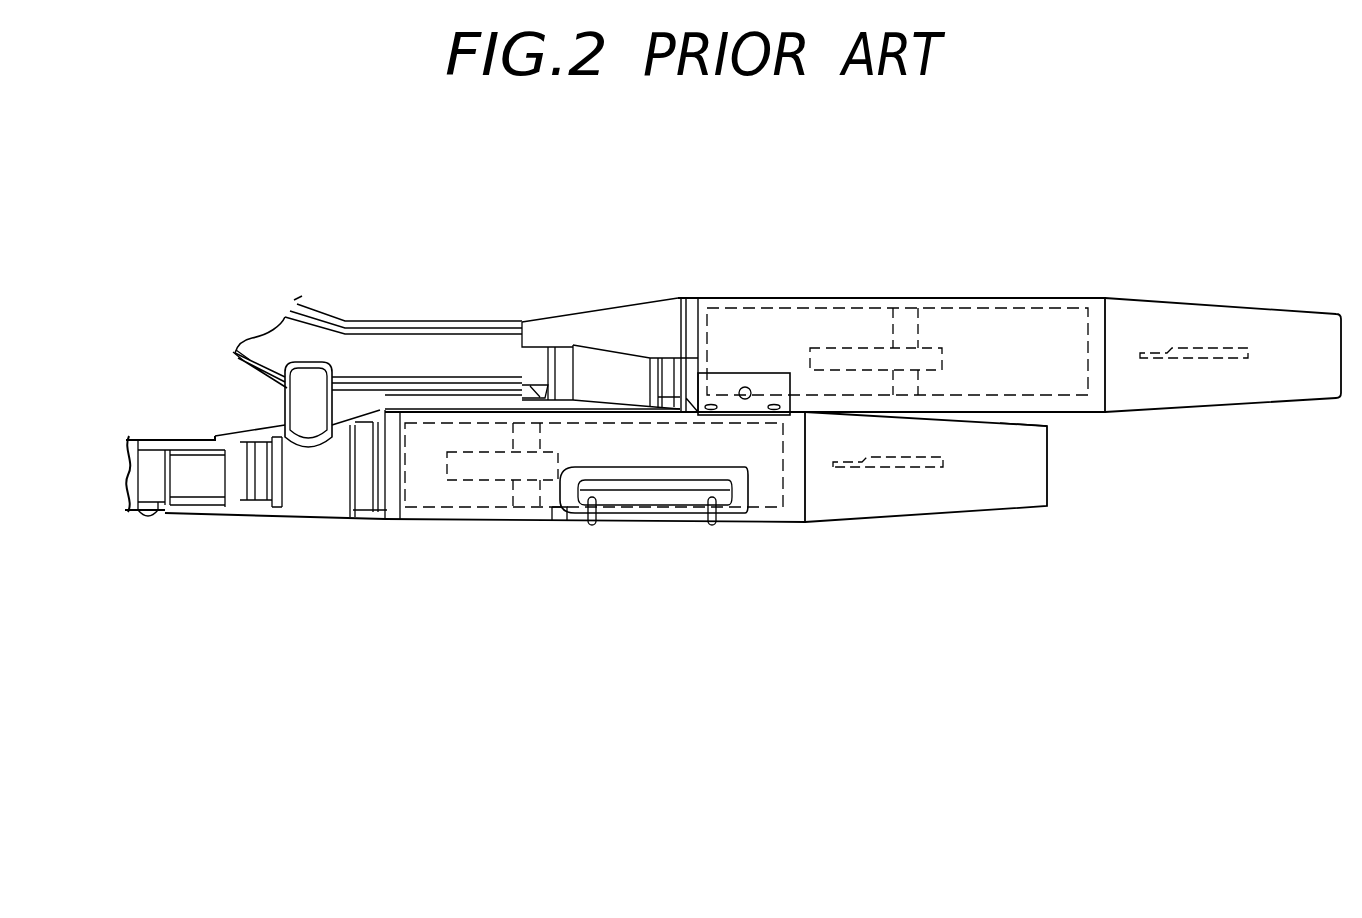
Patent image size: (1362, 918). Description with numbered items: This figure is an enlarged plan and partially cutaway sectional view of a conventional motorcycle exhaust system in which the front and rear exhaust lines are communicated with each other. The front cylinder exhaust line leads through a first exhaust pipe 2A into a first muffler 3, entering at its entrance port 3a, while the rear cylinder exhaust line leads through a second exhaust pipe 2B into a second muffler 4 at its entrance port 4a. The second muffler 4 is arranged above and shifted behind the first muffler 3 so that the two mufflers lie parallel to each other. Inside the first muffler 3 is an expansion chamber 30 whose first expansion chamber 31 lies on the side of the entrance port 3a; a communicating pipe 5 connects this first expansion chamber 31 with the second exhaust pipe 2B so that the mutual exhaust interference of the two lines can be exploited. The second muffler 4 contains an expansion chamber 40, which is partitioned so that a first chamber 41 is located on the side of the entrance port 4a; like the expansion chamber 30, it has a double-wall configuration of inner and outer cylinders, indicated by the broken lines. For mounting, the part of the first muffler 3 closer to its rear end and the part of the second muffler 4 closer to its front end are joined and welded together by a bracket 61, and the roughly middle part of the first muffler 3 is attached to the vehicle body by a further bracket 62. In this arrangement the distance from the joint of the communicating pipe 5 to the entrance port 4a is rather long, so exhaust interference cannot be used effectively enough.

The first exhaust pipe 2A is at (134, 470).
The second exhaust pipe 2B is at (438, 320).
The first muffler 3 is at (606, 528).
The entrance port 3a is at (217, 516).
The expansion chamber 30 is at (550, 524).
The first expansion chamber 31 is at (328, 487).
The second muffler 4 is at (863, 267).
The entrance port 4a is at (520, 321).
The expansion chamber 40 is at (1033, 345).
The first chamber 41 is at (864, 308).
The communicating pipe 5 is at (285, 396).
The bracket 61 is at (745, 387).
The bracket 62 is at (683, 507).